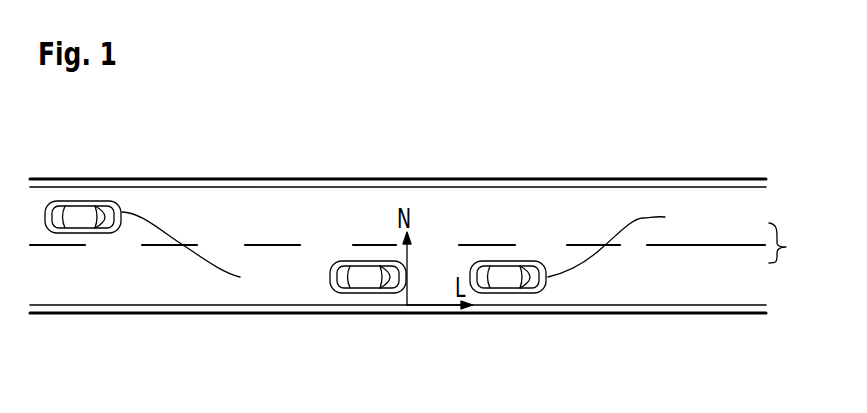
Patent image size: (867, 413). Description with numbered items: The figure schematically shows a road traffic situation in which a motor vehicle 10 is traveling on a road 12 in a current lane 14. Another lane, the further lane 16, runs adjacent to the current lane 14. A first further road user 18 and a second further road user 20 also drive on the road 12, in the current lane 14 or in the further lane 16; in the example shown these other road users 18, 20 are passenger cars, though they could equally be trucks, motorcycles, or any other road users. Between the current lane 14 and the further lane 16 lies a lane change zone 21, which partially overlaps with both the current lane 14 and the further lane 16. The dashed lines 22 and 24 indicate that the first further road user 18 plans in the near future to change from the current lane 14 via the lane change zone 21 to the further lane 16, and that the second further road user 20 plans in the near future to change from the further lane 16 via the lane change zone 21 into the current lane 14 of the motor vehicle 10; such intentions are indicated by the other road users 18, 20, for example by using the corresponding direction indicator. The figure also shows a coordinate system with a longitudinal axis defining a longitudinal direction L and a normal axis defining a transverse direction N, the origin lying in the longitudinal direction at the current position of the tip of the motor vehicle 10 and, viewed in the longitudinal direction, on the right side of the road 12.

The motor vehicle 10 is at (363, 283).
The road 12 is at (398, 231).
The current lane 14 is at (715, 290).
The further lane 16 is at (713, 202).
The first further road user 18 is at (503, 283).
The second further road user 20 is at (82, 212).
The lane change zone 21 is at (792, 255).
The dashed line 22 is at (643, 217).
The dashed line 24 is at (153, 222).